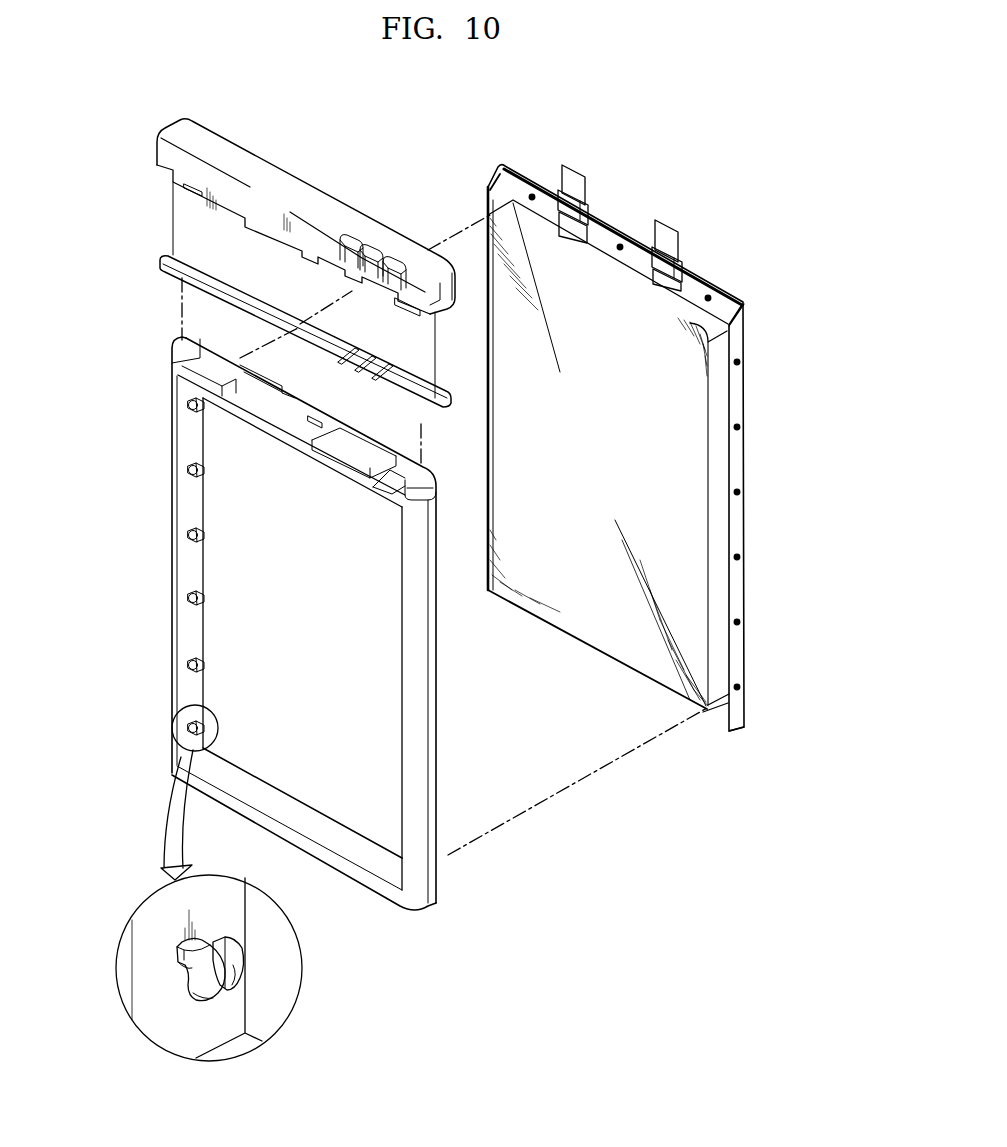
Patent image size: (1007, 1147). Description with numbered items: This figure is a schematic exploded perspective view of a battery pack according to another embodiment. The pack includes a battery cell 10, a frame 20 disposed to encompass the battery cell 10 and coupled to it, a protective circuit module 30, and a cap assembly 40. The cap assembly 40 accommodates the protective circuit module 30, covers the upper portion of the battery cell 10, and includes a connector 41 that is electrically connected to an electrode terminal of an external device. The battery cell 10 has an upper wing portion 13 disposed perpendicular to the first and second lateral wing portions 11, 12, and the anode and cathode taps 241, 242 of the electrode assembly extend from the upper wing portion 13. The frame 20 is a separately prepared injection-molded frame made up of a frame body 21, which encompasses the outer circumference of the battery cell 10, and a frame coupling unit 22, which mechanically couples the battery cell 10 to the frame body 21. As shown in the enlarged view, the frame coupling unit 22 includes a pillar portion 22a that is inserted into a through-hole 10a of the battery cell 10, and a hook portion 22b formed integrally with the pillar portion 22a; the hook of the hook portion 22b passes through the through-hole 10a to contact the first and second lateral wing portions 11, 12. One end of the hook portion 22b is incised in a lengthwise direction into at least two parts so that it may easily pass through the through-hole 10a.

The battery cell 10 is at (624, 428).
The through-hole 10a is at (709, 300).
The first lateral wing portion 11 is at (490, 183).
The second lateral wing portion 12 is at (740, 388).
The upper wing portion 13 is at (610, 232).
The anode tap 241 is at (575, 176).
The cathode tap 242 is at (668, 229).
The frame 20 is at (315, 699).
The frame body 21 is at (420, 733).
The frame coupling unit 22 is at (205, 665).
The pillar portion 22a is at (178, 946).
The hook portion 22b is at (228, 937).
The protective circuit module 30 is at (442, 397).
The cap assembly 40 is at (350, 220).
The connector 41 is at (392, 257).